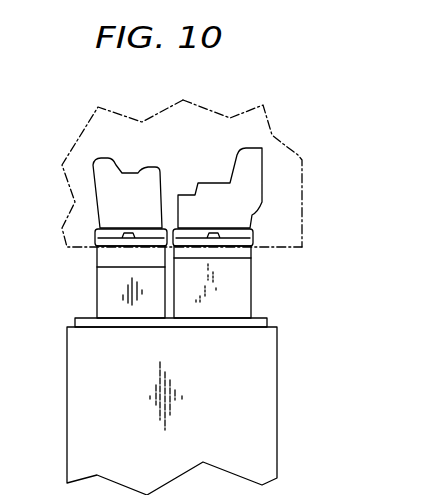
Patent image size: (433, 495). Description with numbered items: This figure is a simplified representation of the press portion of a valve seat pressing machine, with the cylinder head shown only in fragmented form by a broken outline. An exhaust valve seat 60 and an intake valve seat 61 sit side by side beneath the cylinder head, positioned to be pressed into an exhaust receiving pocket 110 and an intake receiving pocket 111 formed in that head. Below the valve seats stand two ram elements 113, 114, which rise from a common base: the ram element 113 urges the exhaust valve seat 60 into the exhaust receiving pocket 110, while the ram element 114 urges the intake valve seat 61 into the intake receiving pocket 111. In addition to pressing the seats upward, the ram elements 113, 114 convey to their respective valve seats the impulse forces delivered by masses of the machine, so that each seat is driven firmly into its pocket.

The exhaust valve seat 60 is at (120, 228).
The intake valve seat 61 is at (232, 226).
The exhaust receiving pocket 110 is at (143, 188).
The intake receiving pocket 111 is at (192, 200).
The ram element 113 is at (110, 297).
The ram element 114 is at (240, 287).